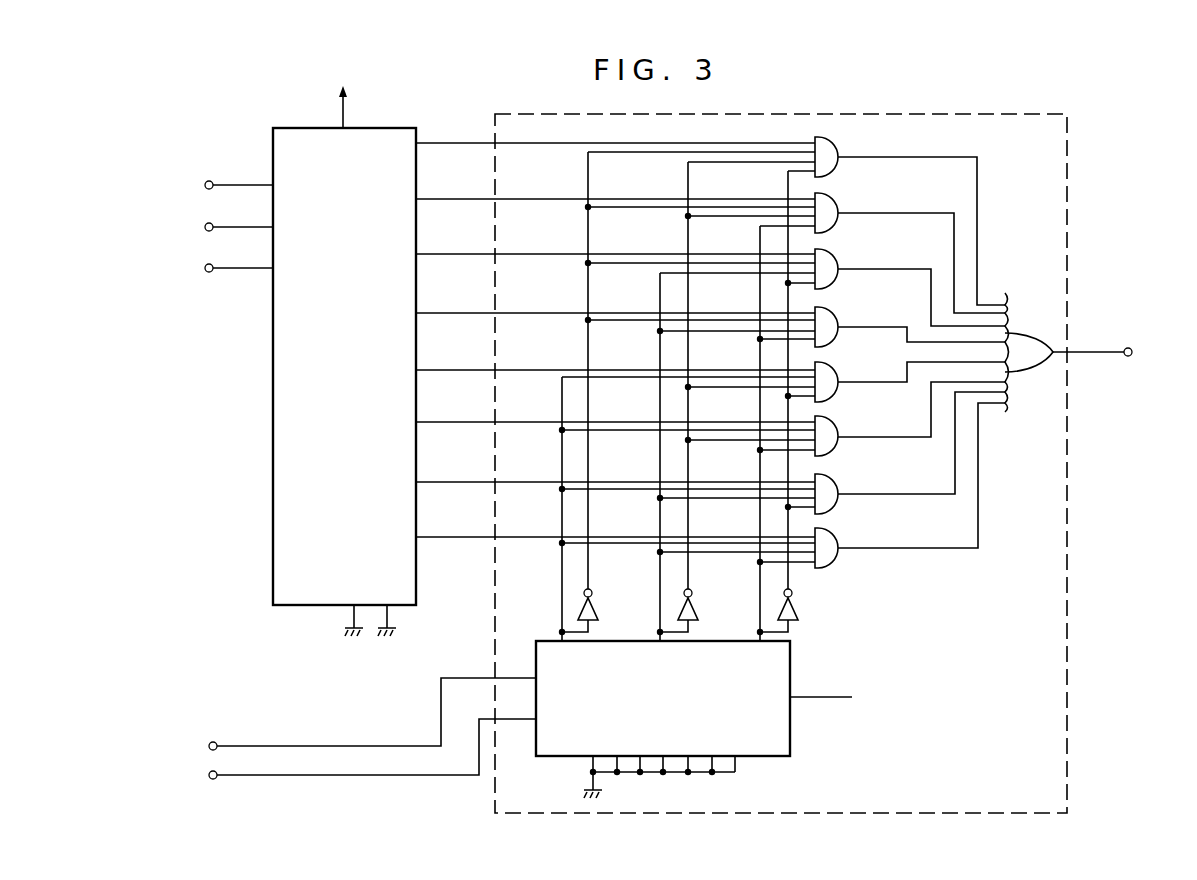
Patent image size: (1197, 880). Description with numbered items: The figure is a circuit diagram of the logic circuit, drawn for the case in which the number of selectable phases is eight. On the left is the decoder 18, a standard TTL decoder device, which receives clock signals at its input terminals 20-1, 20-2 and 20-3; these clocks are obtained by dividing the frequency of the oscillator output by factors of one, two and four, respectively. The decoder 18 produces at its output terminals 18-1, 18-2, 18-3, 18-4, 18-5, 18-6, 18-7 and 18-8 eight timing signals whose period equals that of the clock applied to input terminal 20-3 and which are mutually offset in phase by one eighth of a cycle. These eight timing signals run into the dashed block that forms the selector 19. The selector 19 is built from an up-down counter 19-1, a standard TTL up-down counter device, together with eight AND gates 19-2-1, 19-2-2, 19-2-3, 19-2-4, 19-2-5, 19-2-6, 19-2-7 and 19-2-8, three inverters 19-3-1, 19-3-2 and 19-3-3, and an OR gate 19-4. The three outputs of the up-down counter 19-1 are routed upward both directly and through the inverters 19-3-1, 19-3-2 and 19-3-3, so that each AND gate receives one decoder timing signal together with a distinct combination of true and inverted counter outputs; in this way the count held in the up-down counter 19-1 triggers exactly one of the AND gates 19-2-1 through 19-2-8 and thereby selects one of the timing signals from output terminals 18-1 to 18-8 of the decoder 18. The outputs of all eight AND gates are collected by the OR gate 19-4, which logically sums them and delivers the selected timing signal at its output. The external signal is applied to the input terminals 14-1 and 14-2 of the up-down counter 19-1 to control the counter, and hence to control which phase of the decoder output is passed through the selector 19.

The decoder 18 is at (396, 128).
The output terminal 18-1 is at (438, 146).
The output terminal 18-2 is at (438, 202).
The output terminal 18-3 is at (438, 257).
The output terminal 18-4 is at (438, 316).
The output terminal 18-5 is at (438, 373).
The output terminal 18-6 is at (438, 425).
The output terminal 18-7 is at (438, 485).
The output terminal 18-8 is at (438, 540).
The selector 19 is at (978, 114).
The up-down counter 19-1 is at (792, 664).
The AND gate 19-2-1 is at (831, 146).
The AND gate 19-2-2 is at (831, 205).
The AND gate 19-2-3 is at (831, 261).
The AND gate 19-2-4 is at (831, 316).
The AND gate 19-2-5 is at (830, 398).
The AND gate 19-2-6 is at (830, 452).
The AND gate 19-2-7 is at (830, 509).
The AND gate 19-2-8 is at (830, 563).
The inverter 19-3-1 is at (597, 609).
The inverter 19-3-2 is at (697, 609).
The inverter 19-3-3 is at (797, 613).
The OR gate 19-4 is at (1022, 333).
The input terminal 20-1 is at (205, 187).
The input terminal 20-2 is at (205, 229).
The input terminal 20-3 is at (205, 270).
The input terminal 14-1 is at (209, 748).
The input terminal 14-2 is at (209, 777).